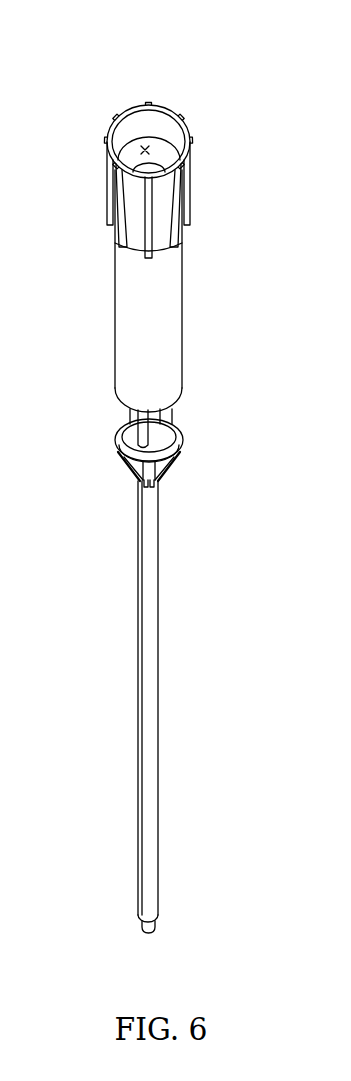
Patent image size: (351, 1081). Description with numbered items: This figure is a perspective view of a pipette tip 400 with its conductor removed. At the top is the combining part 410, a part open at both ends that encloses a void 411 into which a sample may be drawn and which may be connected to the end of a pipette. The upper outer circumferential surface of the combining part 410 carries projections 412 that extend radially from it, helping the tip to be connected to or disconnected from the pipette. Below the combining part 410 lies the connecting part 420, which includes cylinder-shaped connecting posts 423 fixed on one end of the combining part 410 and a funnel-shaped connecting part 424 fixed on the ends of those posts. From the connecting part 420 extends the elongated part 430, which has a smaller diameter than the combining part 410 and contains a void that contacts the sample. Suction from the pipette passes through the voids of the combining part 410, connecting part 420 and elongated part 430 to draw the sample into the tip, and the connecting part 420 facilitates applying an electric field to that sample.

The pipette tip 400 is at (222, 168).
The combining part 410 is at (173, 303).
The void 411 is at (147, 137).
The projections 412 is at (111, 218).
The connecting part 420 is at (141, 446).
The connecting posts 423 is at (143, 428).
The funnel-shaped connecting part 424 is at (131, 466).
The elongated part 430 is at (152, 655).